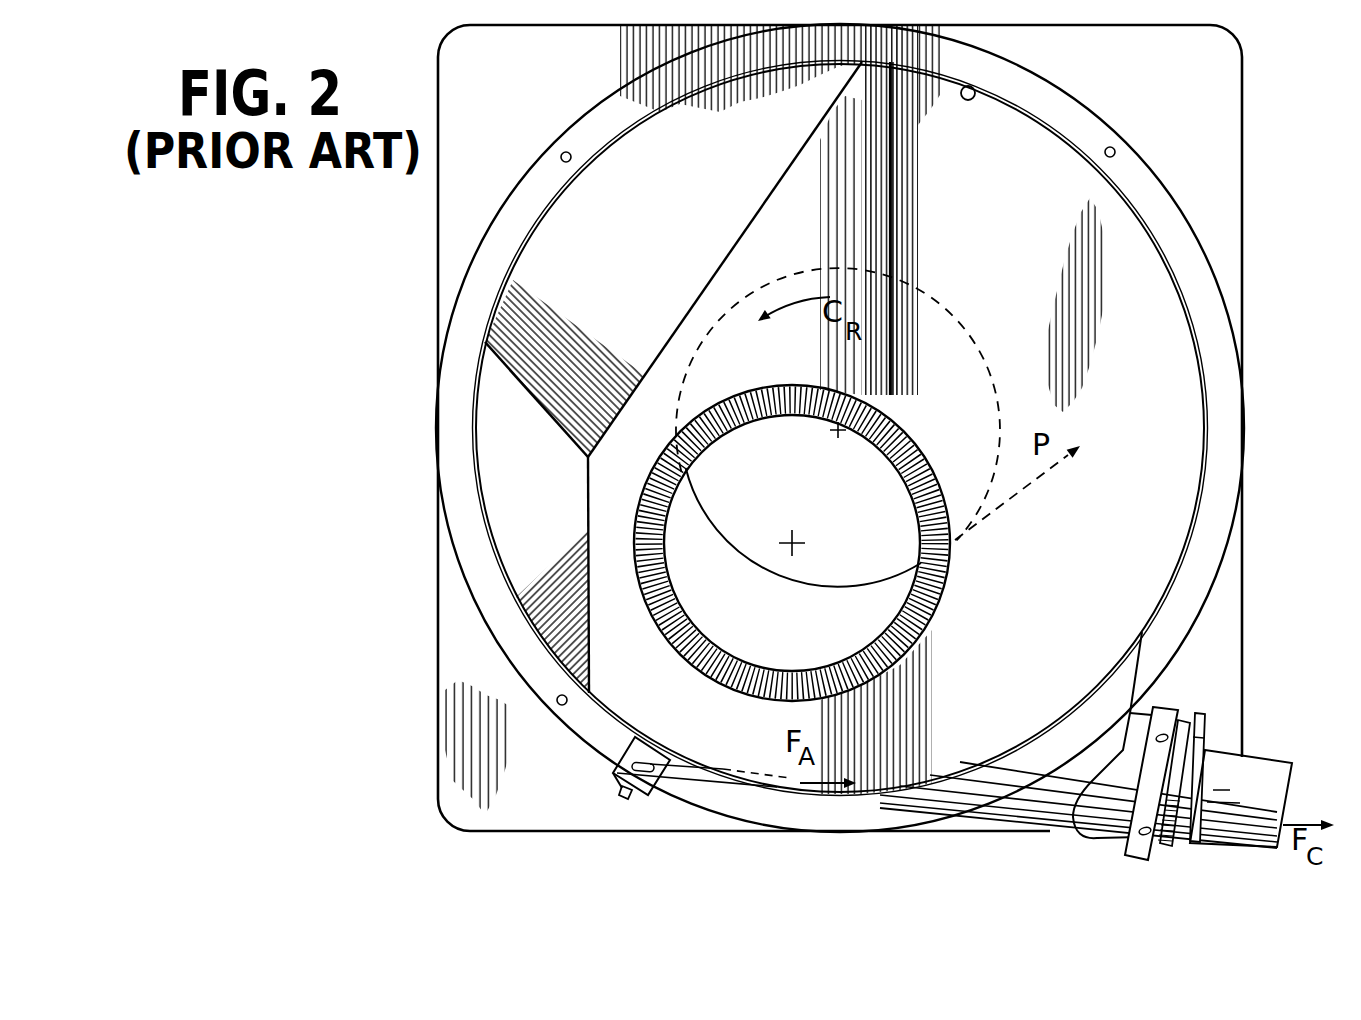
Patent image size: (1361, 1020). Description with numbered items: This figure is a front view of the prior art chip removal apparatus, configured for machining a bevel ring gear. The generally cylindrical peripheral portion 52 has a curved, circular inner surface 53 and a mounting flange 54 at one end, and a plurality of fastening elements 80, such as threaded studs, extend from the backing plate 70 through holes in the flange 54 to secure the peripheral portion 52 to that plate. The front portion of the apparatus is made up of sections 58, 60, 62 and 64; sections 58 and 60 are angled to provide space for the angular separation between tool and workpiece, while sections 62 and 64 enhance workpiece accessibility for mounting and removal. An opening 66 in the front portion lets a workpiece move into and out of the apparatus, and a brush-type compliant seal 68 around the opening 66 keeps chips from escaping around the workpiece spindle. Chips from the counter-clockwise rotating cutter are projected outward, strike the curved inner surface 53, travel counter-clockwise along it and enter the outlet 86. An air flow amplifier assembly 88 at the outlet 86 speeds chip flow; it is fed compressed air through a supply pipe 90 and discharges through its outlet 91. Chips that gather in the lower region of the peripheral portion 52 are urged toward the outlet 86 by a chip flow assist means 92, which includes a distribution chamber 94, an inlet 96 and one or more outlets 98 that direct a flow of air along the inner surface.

The peripheral portion 52 is at (1152, 230).
The inner surface 53 is at (975, 88).
The mounting flange 54 is at (1068, 108).
The section 58 is at (1006, 167).
The section 60 is at (872, 157).
The section 62 is at (702, 225).
The section 64 is at (531, 450).
The opening 66 is at (804, 640).
The compliant seal 68 is at (640, 587).
The backing plate 70 is at (511, 70).
The fastening elements 80 is at (567, 150).
The outlet 86 is at (1013, 793).
The air flow amplifier assembly 88 is at (1143, 813).
The supply pipe 90 is at (1203, 730).
The outlet 91 is at (1233, 823).
The chip flow assist means 92 is at (587, 770).
The distribution chamber 94 is at (617, 783).
The inlet 96 is at (628, 799).
The outlets 98 is at (750, 765).